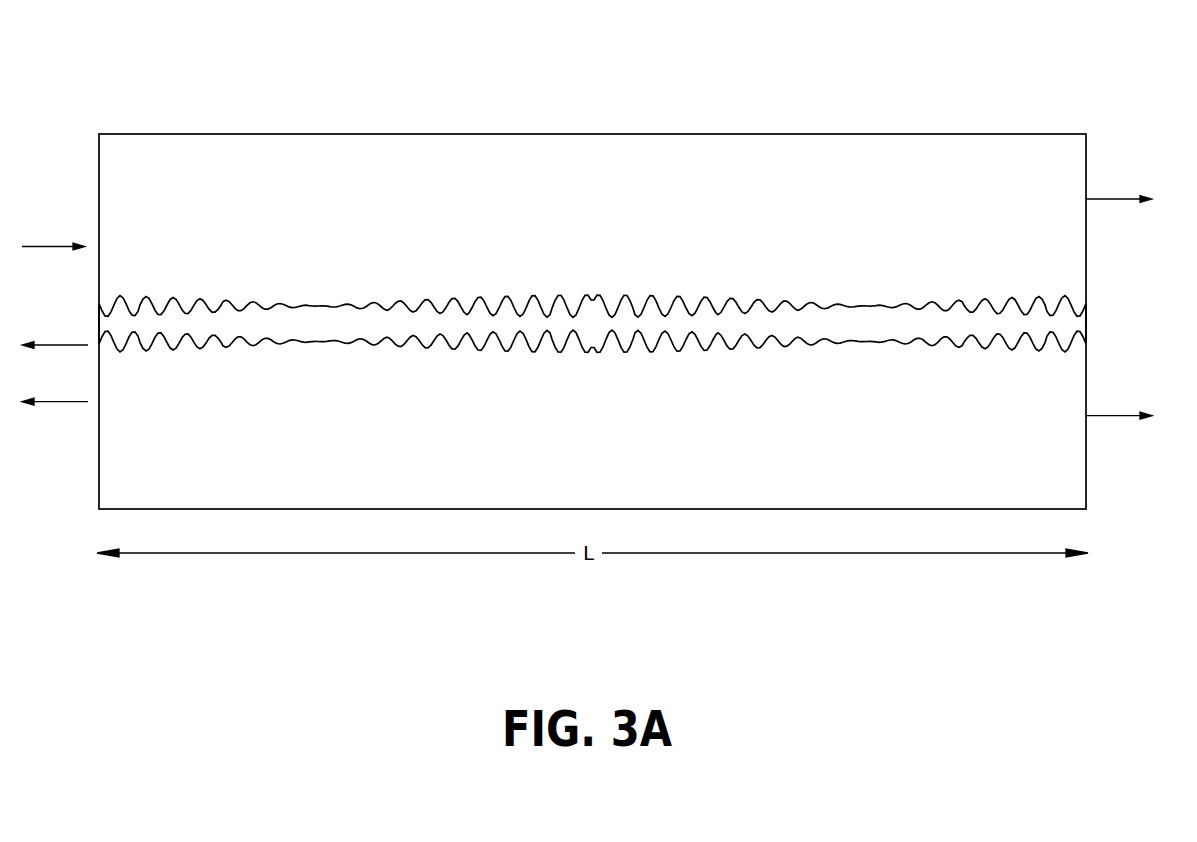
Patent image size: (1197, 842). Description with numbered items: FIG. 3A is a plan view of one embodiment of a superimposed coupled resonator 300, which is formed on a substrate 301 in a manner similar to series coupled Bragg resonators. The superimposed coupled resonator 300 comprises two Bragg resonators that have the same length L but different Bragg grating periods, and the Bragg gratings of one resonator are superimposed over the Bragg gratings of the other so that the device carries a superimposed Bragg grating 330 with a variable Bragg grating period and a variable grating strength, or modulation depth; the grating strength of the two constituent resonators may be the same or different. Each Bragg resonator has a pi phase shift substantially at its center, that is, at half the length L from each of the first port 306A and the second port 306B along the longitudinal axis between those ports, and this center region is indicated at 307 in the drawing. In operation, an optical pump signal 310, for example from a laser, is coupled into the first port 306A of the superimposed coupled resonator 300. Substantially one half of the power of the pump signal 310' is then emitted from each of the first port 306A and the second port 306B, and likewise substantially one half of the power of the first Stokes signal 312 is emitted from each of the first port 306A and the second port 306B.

The superimposed coupled resonator 300 is at (490, 120).
The substrate 301 is at (872, 456).
The first port 306A is at (99, 323).
The second port 306B is at (1087, 327).
The central high-amplitude corrugation region 307 is at (593, 306).
The optical pump signal 310 is at (53, 235).
The pump signal 310' is at (587, 273).
The first Stokes signal 312 is at (587, 425).
The superimposed Bragg grating 330 is at (227, 301).